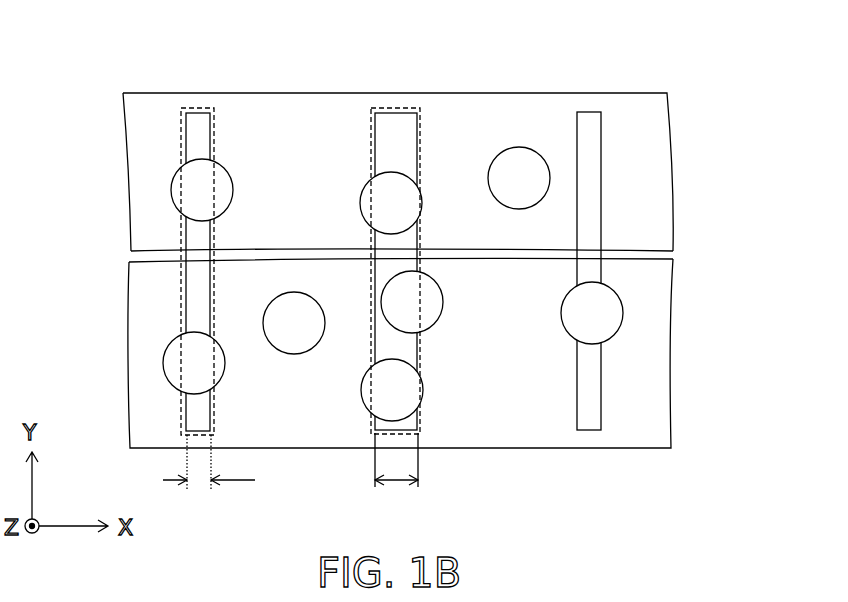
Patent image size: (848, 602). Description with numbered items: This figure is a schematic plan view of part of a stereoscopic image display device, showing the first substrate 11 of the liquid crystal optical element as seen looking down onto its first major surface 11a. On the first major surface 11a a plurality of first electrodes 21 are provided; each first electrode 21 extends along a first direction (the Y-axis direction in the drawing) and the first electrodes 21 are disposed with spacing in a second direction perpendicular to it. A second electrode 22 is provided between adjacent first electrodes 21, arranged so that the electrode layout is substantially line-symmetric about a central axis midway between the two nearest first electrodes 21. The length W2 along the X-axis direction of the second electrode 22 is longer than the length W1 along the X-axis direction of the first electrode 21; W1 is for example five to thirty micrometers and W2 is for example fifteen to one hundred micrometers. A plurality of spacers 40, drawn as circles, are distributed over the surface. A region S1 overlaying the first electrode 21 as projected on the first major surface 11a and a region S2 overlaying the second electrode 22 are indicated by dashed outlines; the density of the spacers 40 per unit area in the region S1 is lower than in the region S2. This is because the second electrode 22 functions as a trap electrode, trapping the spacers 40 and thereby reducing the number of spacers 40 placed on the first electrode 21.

The first substrate 11 is at (619, 84).
The first major surface 11a is at (645, 168).
The first electrode 21 is at (193, 125).
The second electrode 22 is at (390, 130).
The spacer 40 is at (173, 190).
The region overlaying the first electrode S1 is at (178, 145).
The region overlaying the second electrode S2 is at (422, 145).
The length along the X-axis direction of the first electrode W1 is at (209, 478).
The length along the X-axis direction of the second electrode W2 is at (397, 477).